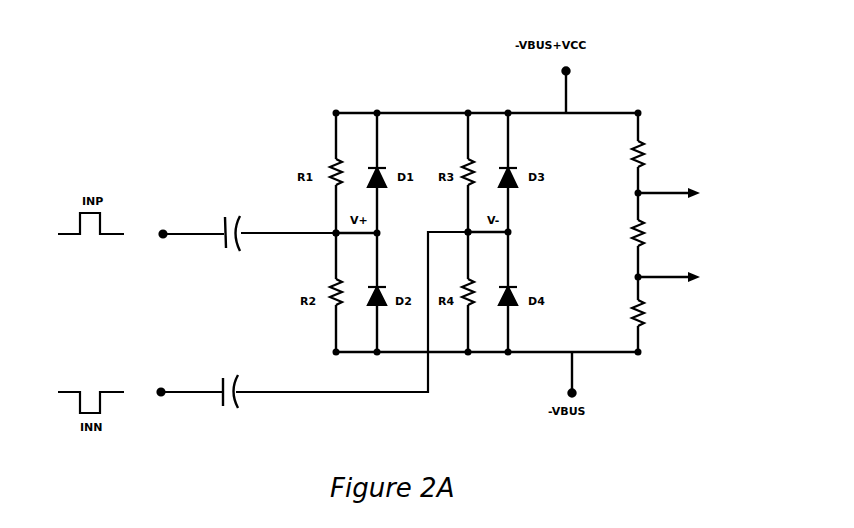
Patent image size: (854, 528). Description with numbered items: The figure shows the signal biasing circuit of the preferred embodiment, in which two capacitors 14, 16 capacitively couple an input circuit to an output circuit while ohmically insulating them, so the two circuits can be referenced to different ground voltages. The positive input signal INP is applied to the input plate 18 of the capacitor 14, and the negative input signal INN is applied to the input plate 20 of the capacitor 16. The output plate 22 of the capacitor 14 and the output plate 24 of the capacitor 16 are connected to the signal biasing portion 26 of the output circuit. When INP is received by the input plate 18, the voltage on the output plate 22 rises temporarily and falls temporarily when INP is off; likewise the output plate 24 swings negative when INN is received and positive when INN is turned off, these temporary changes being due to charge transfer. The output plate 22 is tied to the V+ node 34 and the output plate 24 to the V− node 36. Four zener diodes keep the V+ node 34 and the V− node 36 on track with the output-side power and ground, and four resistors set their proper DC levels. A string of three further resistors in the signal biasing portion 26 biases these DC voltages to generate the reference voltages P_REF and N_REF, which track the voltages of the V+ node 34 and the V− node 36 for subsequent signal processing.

The capacitor 14 is at (228, 187).
The capacitor 16 is at (215, 421).
The input plate 18 is at (207, 217).
The input plate 20 is at (195, 408).
The output plate 22 is at (243, 217).
The output plate 24 is at (240, 377).
The signal biasing portion 26 is at (652, 92).
The V+ node 34 is at (328, 237).
The V− node 36 is at (463, 227).